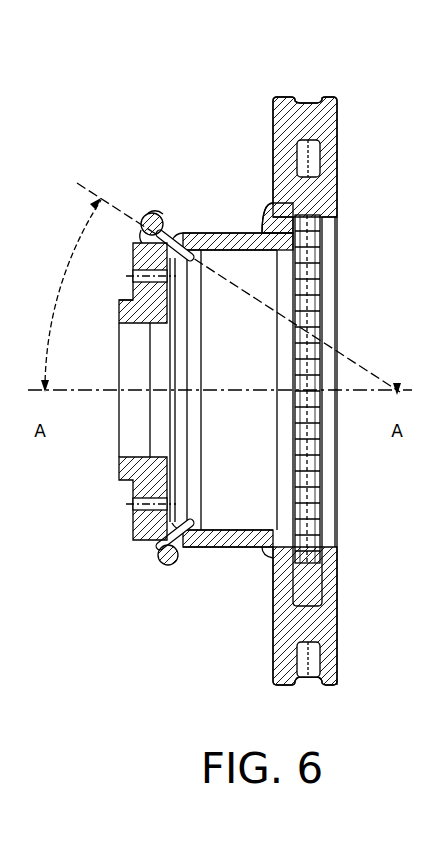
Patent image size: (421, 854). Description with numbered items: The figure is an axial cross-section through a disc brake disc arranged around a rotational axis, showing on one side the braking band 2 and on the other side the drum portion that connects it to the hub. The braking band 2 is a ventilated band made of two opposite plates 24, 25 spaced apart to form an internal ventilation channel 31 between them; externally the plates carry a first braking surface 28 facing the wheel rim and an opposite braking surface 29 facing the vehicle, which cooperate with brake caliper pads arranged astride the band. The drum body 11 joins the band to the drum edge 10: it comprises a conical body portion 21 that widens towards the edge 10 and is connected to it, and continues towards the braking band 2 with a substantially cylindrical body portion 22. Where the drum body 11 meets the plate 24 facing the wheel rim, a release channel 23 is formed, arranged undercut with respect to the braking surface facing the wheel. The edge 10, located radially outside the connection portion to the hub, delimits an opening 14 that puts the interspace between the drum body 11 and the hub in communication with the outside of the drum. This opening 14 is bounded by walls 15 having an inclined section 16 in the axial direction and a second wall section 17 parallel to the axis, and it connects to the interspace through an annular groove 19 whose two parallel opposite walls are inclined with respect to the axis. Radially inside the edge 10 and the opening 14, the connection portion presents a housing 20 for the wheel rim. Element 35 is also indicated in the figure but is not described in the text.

The braking band 2 is at (325, 128).
The edge 10 is at (180, 232).
The drum body 11 is at (240, 232).
The opening 14 is at (143, 214).
The walls 15 is at (135, 236).
The inclined wall section 16 is at (153, 212).
The second wall section 17 is at (133, 274).
The annular groove 19 is at (191, 232).
The housing 20 is at (133, 522).
The conical body portion 21 is at (205, 500).
The cylindrical body portion 22 is at (262, 548).
The release channel 23 is at (266, 212).
The plate 24 is at (275, 114).
The plate 25 is at (333, 615).
The first braking surface 28 is at (272, 640).
The opposite braking surface 29 is at (340, 108).
The internal ventilation channel 31 is at (322, 478).
The hub flange 35 is at (124, 476).